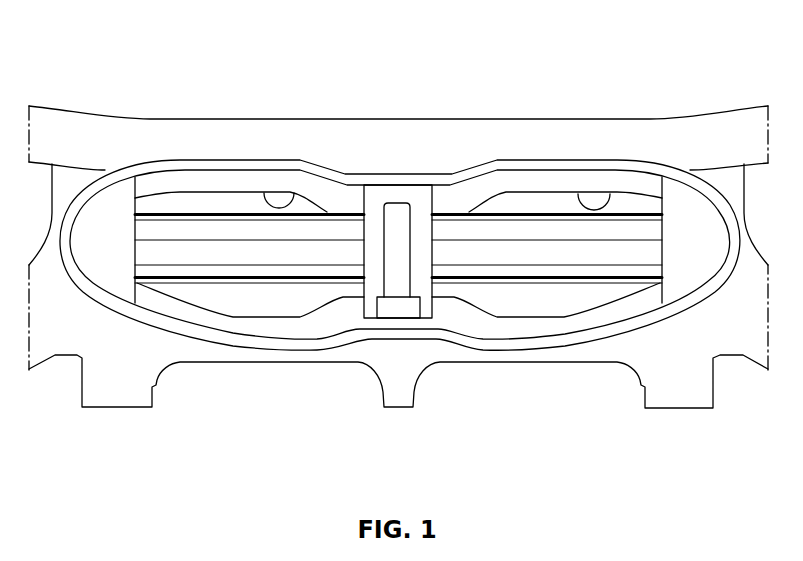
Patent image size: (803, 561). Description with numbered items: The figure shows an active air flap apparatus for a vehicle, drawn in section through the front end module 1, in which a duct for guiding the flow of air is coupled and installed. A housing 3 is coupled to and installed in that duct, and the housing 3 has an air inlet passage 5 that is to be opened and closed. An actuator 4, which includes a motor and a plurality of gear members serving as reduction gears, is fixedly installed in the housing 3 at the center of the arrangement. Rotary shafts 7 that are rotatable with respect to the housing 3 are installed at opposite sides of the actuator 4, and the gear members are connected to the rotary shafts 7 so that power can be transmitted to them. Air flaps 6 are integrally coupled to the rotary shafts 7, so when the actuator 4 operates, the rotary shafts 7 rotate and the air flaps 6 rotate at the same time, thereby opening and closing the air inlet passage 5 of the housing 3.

The front end module 1 is at (410, 143).
The housing 3 is at (497, 327).
The actuator 4 is at (402, 267).
The air inlet passage 5 is at (297, 192).
The air flap 6 is at (217, 293).
The rotary shaft 7 is at (257, 258).